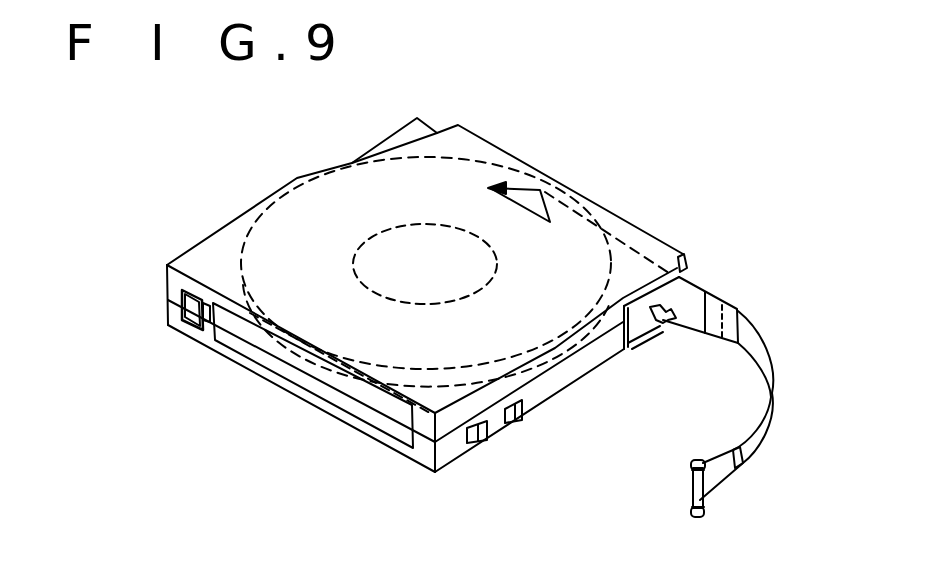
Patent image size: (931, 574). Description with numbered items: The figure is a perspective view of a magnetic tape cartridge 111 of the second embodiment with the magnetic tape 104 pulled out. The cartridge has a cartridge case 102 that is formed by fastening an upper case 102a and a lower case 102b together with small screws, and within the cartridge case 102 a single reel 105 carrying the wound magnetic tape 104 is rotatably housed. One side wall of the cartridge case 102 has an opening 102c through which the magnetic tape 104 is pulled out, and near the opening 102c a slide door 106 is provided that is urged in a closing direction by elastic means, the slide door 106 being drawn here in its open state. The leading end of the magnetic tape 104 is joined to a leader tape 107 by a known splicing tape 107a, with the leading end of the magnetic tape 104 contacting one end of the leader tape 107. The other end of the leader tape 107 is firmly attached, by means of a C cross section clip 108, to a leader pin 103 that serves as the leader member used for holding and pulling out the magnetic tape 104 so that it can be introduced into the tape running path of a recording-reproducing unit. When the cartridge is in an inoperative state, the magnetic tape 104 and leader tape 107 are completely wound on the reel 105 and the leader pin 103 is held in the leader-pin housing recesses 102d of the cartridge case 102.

The tape cartridge 111 is at (312, 141).
The cartridge case 102 is at (583, 191).
The upper case 102a is at (208, 248).
The lower case 102b is at (193, 338).
The opening 102c is at (631, 311).
The leader-pin housing recesses 102d is at (660, 325).
The leader pin 103 is at (695, 462).
The magnetic tape 104 is at (690, 290).
The reel 105 is at (457, 161).
The slide door 106 is at (633, 352).
The leader tape 107 is at (773, 352).
The splicing tape 107a is at (747, 298).
The C cross section clip 108 is at (690, 493).